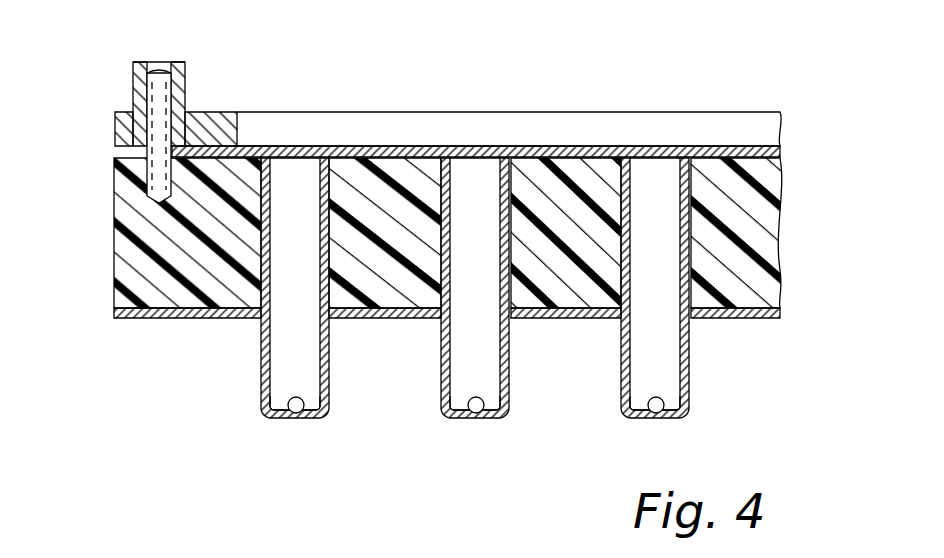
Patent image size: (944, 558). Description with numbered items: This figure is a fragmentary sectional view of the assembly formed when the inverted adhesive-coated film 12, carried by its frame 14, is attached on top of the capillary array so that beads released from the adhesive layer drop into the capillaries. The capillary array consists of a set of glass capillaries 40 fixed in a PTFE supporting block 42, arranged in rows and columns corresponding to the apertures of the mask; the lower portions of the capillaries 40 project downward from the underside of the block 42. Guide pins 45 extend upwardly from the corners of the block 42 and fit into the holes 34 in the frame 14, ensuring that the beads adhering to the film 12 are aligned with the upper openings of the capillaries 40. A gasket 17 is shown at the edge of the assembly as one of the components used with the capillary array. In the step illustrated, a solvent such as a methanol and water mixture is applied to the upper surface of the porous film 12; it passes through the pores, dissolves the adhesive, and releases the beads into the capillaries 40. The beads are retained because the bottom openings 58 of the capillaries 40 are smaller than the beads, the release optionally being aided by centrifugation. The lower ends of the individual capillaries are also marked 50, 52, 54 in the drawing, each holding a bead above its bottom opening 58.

The adhesive-coated film 12 is at (373, 147).
The frame 14 is at (115, 135).
The gasket 17 is at (782, 316).
The holes 34 is at (157, 62).
The glass capillaries 40 is at (260, 323).
The PTFE supporting block 42 is at (115, 230).
The guide pins 45 is at (158, 90).
The first well bottom 50 is at (285, 400).
The second well bottom 52 is at (465, 400).
The third well bottom 54 is at (645, 400).
The bottom openings 58 is at (296, 420).